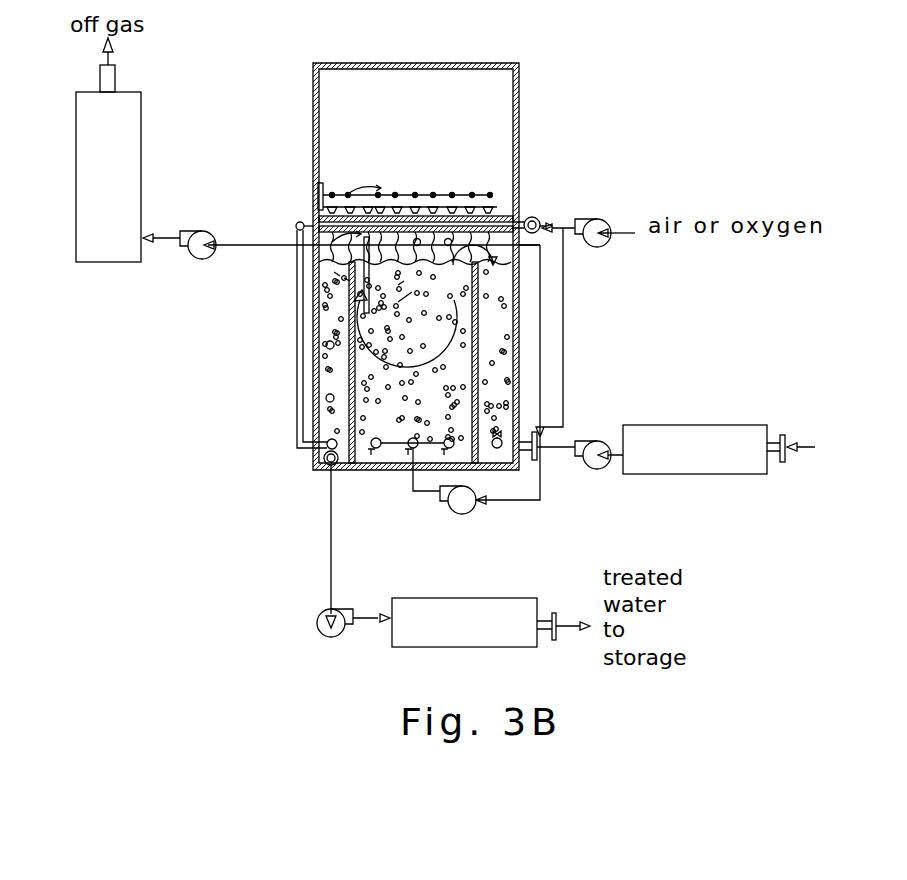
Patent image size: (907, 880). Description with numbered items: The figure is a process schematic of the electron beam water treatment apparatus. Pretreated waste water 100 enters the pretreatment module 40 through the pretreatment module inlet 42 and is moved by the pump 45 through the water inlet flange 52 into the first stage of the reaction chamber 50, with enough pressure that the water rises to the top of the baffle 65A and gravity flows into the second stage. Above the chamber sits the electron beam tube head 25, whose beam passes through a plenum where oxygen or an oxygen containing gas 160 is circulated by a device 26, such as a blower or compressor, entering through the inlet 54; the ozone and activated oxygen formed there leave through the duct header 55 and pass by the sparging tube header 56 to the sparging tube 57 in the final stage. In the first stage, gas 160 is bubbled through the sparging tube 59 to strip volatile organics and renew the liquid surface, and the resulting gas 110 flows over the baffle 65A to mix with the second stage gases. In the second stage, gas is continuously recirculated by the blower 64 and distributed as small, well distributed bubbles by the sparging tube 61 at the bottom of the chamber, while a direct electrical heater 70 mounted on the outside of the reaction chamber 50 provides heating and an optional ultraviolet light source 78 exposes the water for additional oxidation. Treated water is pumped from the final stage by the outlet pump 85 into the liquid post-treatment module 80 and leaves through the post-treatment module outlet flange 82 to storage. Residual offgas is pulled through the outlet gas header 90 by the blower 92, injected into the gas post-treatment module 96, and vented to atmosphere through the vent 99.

The electron beam tube head 25 is at (520, 112).
The device 26 is at (593, 218).
The pretreatment module 40 is at (706, 475).
The pretreatment module inlet 42 is at (782, 462).
The pump 45 is at (600, 470).
The reaction chamber 50 is at (518, 322).
The water inlet flange 52 is at (540, 432).
The inlet 54 is at (538, 217).
The duct header 55 is at (298, 221).
The sparging tube header 56 is at (298, 388).
The sparging tube 57 is at (326, 462).
The sparging tube 59 is at (497, 450).
The sparging tube 61 is at (449, 450).
The blower 64 is at (462, 512).
The baffle 65A is at (478, 365).
The direct electrical heater 70 is at (400, 458).
The ultraviolet light source 78 is at (326, 396).
The liquid post-treatment module 80 is at (480, 598).
The post-treatment module outlet flange 82 is at (553, 613).
The outlet pump 85 is at (352, 608).
The outlet gas header 90 is at (246, 243).
The blower 92 is at (200, 230).
The gas post-treatment module 96 is at (141, 128).
The vent 99 is at (117, 72).
The pretreated waste water 100 is at (825, 420).
The gas 110 is at (500, 252).
The oxygen or oxygen containing gas 160 is at (718, 222).